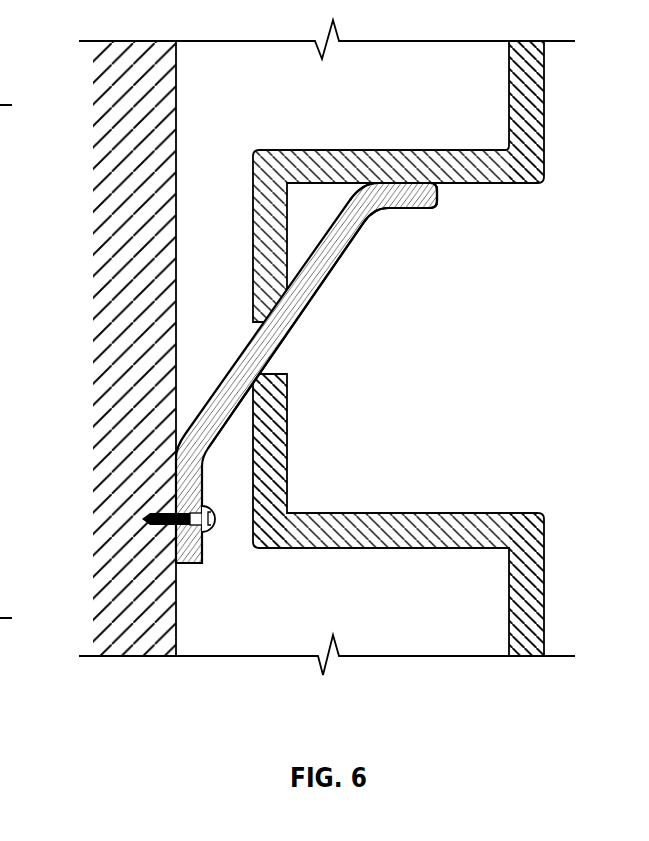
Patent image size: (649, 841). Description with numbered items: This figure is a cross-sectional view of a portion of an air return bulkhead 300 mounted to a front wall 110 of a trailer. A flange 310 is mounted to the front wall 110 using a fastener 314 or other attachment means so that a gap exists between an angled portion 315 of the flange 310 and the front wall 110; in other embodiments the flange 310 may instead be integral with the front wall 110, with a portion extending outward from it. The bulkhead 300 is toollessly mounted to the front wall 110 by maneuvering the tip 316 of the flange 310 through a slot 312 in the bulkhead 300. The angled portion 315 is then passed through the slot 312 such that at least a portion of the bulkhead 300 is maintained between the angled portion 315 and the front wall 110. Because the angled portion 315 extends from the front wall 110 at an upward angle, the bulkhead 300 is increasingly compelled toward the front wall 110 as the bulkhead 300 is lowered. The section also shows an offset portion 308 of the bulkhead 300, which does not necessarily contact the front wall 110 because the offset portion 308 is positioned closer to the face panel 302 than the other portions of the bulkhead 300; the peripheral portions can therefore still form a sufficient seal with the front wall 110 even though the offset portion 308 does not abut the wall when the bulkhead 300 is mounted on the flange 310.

The front wall 110 is at (176, 108).
The air return bulkhead 300 is at (400, 348).
The face panel 302 is at (544, 108).
The offset portion 308 is at (288, 440).
The flange 310 is at (346, 373).
The slot 312 is at (255, 326).
The fastener 314 is at (215, 527).
The angled portion 315 is at (311, 300).
The tip 316 is at (438, 194).